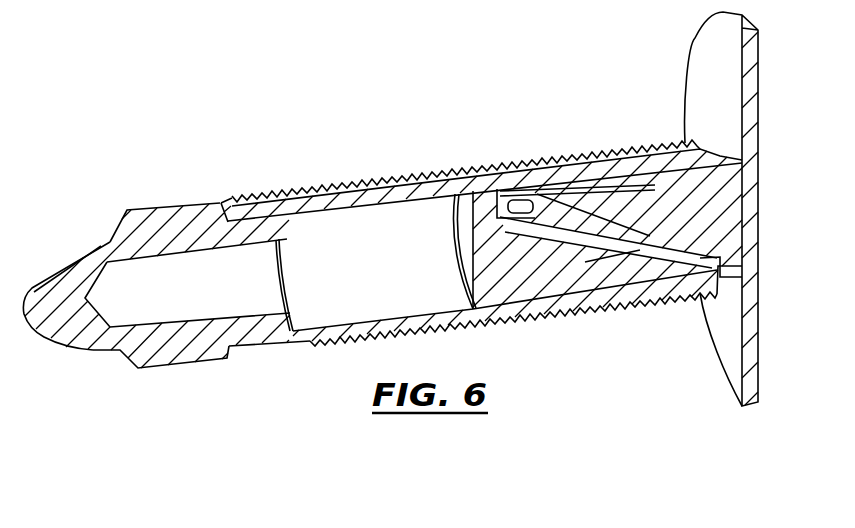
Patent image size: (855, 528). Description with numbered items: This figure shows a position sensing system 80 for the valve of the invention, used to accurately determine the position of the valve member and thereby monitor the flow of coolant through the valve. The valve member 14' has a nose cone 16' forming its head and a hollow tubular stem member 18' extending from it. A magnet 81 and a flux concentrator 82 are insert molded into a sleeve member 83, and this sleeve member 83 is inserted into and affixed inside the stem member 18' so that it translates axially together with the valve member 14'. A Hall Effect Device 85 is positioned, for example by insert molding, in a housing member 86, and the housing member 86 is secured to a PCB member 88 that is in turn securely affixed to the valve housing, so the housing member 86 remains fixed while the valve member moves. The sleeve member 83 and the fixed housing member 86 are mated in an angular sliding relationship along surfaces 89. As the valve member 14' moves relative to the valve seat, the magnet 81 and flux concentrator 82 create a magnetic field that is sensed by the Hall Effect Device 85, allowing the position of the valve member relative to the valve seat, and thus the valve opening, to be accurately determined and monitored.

The valve member 14' is at (159, 324).
The nose cone 16' is at (66, 268).
The hollow tubular stem member 18' is at (486, 347).
The sensor system 80 is at (430, 125).
The magnet 81 is at (605, 268).
The flux concentrator 82 is at (674, 262).
The sleeve member 83 is at (508, 283).
The Hall Effect Device (HED) 85 is at (518, 196).
The housing member 86 is at (672, 194).
The PCB member 88 is at (752, 96).
The surfaces 89 is at (670, 231).